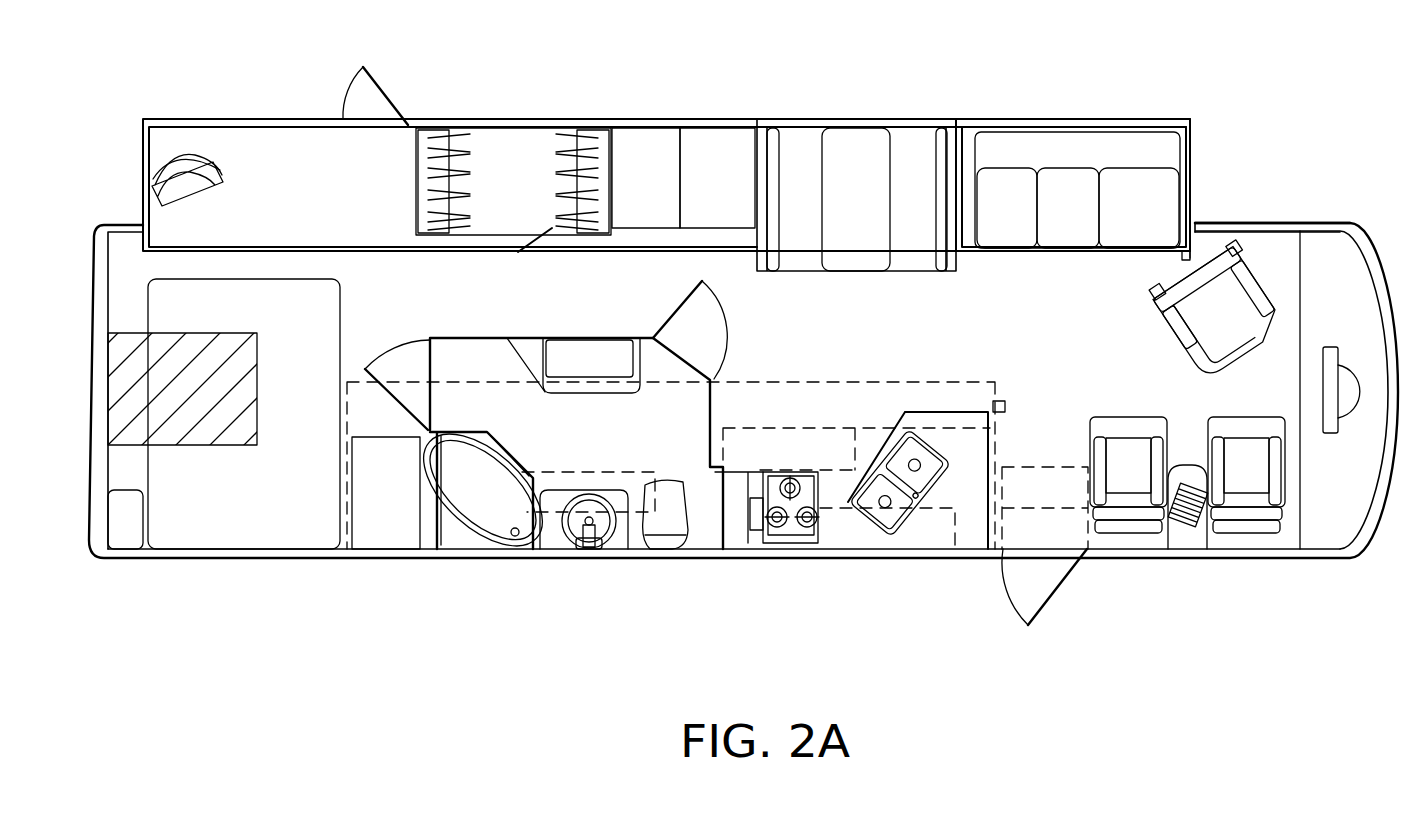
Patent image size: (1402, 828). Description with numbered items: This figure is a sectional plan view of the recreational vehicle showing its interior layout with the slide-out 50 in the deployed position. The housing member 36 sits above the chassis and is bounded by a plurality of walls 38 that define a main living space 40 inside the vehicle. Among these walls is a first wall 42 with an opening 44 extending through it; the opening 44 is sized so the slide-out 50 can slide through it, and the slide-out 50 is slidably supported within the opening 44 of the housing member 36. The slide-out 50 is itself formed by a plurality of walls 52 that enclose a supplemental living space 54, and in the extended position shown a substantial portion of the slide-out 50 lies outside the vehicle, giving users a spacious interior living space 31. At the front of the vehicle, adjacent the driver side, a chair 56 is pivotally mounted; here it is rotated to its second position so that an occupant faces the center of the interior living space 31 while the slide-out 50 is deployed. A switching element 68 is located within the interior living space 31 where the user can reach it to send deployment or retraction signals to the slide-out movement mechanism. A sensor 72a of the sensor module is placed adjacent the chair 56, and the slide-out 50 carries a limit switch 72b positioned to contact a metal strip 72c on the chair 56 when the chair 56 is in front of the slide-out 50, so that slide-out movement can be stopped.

The interior living space 31 is at (1113, 345).
The housing member 36 is at (232, 567).
The walls 38 is at (1320, 160).
The main living space 40 is at (940, 339).
The first wall 42 is at (1213, 222).
The opening 44 is at (668, 90).
The slide-out 50 is at (906, 118).
The walls 52 is at (143, 160).
The supplemental living space 54 is at (868, 207).
The chair 56 is at (1265, 281).
The switching element 68 is at (1005, 407).
The sensor 72a is at (1240, 250).
The limit switch 72b is at (1192, 254).
The metal strip 72c is at (1155, 290).